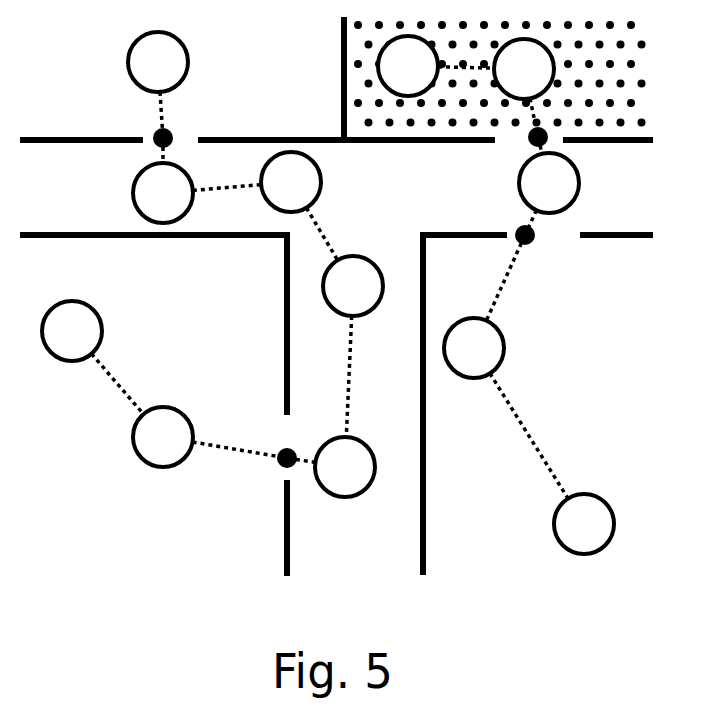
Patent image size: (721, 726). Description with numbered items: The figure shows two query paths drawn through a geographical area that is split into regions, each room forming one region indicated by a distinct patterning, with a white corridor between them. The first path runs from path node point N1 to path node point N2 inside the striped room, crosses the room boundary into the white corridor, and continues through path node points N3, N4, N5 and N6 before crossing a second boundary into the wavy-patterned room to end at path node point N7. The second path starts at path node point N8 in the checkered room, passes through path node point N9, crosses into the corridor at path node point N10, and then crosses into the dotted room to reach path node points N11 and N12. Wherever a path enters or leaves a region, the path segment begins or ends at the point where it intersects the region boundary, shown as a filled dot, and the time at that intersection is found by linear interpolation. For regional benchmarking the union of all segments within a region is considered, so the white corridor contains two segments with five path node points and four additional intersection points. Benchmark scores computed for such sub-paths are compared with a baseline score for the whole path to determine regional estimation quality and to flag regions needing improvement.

The path node point N1 is at (72, 331).
The path node point N2 is at (163, 437).
The path node point N3 is at (345, 467).
The path node point N4 is at (353, 286).
The path node point N5 is at (291, 182).
The path node point N6 is at (163, 193).
The path node point N7 is at (158, 62).
The path node point N8 is at (584, 524).
The path node point N9 is at (474, 348).
The path node point N10 is at (549, 183).
The path node point N11 is at (524, 69).
The path node point N12 is at (408, 66).